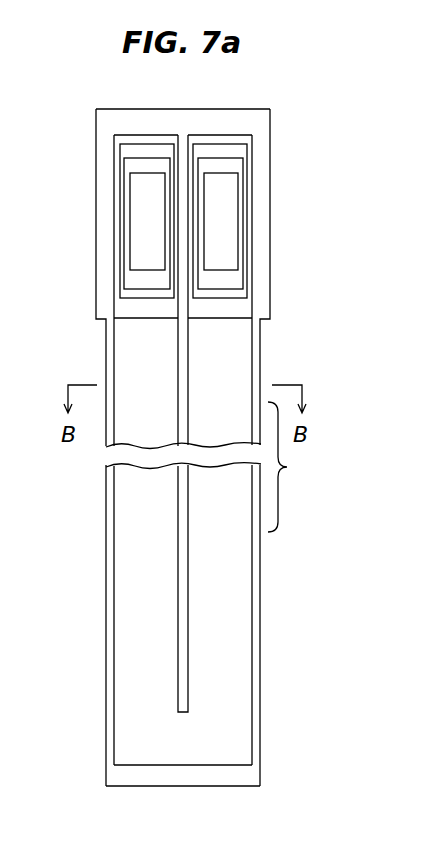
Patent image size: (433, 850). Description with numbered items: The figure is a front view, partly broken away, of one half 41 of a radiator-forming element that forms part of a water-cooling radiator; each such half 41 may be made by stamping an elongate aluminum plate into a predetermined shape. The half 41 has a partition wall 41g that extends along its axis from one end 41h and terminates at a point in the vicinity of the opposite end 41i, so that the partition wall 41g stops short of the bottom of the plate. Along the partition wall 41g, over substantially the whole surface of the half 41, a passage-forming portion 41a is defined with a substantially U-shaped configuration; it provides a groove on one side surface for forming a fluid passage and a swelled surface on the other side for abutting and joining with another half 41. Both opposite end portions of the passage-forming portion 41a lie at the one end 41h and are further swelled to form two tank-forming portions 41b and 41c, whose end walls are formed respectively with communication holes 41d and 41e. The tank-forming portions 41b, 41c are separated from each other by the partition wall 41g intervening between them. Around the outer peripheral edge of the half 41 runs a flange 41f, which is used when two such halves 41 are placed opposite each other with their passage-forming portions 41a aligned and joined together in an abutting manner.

The half 41 is at (283, 136).
The one end 41h is at (237, 115).
The passage-forming portion 41a is at (237, 541).
The partition wall 41g is at (187, 620).
The tank-forming portion 41b is at (132, 164).
The communication hole 41d is at (138, 247).
The tank-forming portion 41c is at (237, 167).
The communication hole 41e is at (230, 248).
The flange 41f is at (252, 774).
The opposite end 41i is at (213, 759).